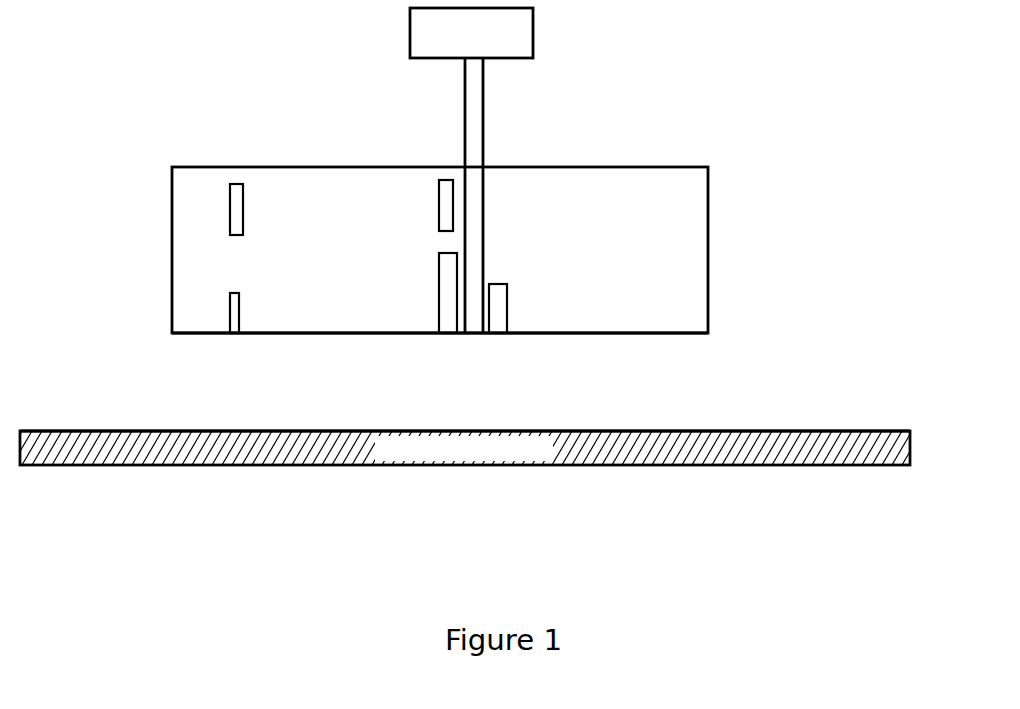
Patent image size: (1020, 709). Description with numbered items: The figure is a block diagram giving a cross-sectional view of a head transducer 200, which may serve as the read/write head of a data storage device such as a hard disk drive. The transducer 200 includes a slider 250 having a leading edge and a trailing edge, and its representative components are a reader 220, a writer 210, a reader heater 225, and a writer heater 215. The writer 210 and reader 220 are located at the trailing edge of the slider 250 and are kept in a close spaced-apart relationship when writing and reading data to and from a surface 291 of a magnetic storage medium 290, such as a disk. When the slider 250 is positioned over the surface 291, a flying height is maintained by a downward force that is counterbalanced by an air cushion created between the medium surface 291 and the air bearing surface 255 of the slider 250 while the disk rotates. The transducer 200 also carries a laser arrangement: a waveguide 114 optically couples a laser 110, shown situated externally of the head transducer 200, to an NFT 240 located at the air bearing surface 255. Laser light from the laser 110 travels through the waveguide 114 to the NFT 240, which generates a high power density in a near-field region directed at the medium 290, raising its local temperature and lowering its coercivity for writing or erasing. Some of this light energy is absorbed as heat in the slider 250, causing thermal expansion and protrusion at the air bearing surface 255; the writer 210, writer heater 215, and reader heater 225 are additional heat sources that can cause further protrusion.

The laser 110 is at (535, 35).
The waveguide 114 is at (485, 118).
The head transducer 200 is at (710, 213).
The writer 210 is at (437, 290).
The writer heater 215 is at (437, 202).
The reader 220 is at (241, 313).
The reader heater 225 is at (245, 208).
The NFT 240 is at (498, 284).
The slider 250 is at (190, 345).
The air bearing surface 255 is at (557, 345).
The magnetic storage medium 290 is at (760, 466).
The surface 291 is at (870, 431).